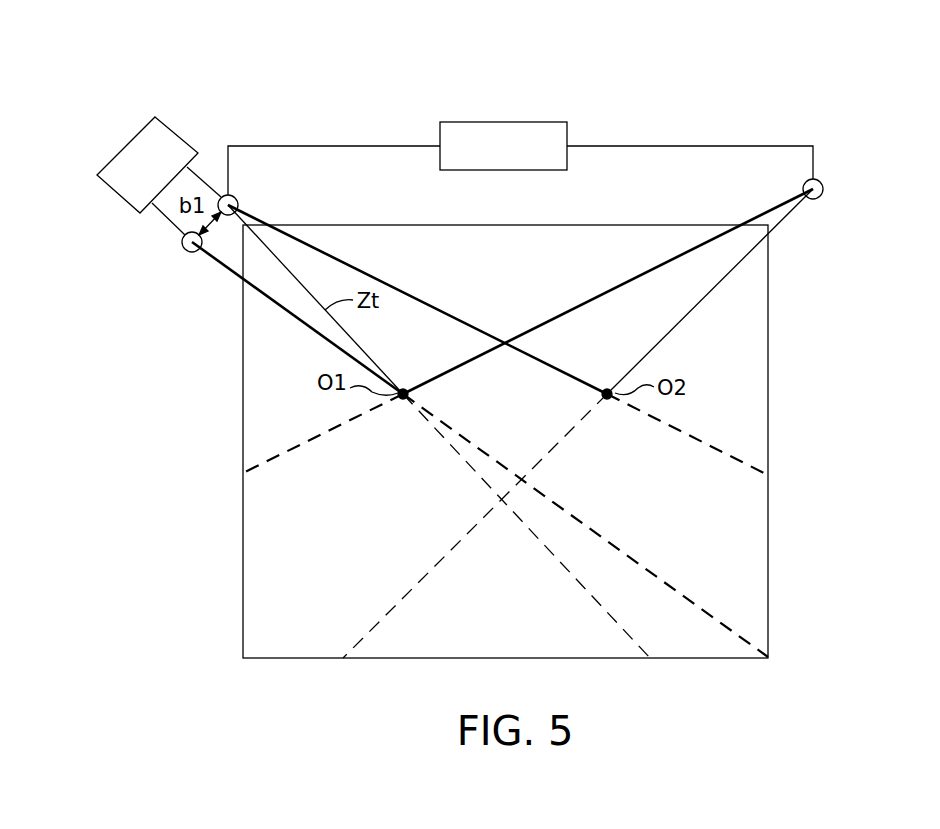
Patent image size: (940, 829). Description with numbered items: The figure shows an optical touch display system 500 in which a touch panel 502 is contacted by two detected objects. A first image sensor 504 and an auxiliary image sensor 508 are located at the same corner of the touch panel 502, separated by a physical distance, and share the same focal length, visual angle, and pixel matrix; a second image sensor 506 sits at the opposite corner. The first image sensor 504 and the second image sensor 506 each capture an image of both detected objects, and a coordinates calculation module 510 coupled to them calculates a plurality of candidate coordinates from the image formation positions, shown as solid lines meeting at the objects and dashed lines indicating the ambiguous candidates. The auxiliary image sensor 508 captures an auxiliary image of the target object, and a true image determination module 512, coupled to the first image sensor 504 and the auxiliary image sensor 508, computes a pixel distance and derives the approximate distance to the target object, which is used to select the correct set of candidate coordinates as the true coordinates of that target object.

The optical touch display system 500 is at (788, 82).
The touch panel 502 is at (768, 555).
The first image sensor 504 is at (237, 200).
The second image sensor 506 is at (820, 197).
The auxiliary image sensor 508 is at (192, 252).
The coordinates calculation module 510 is at (484, 152).
The true image determination module 512 is at (162, 175).